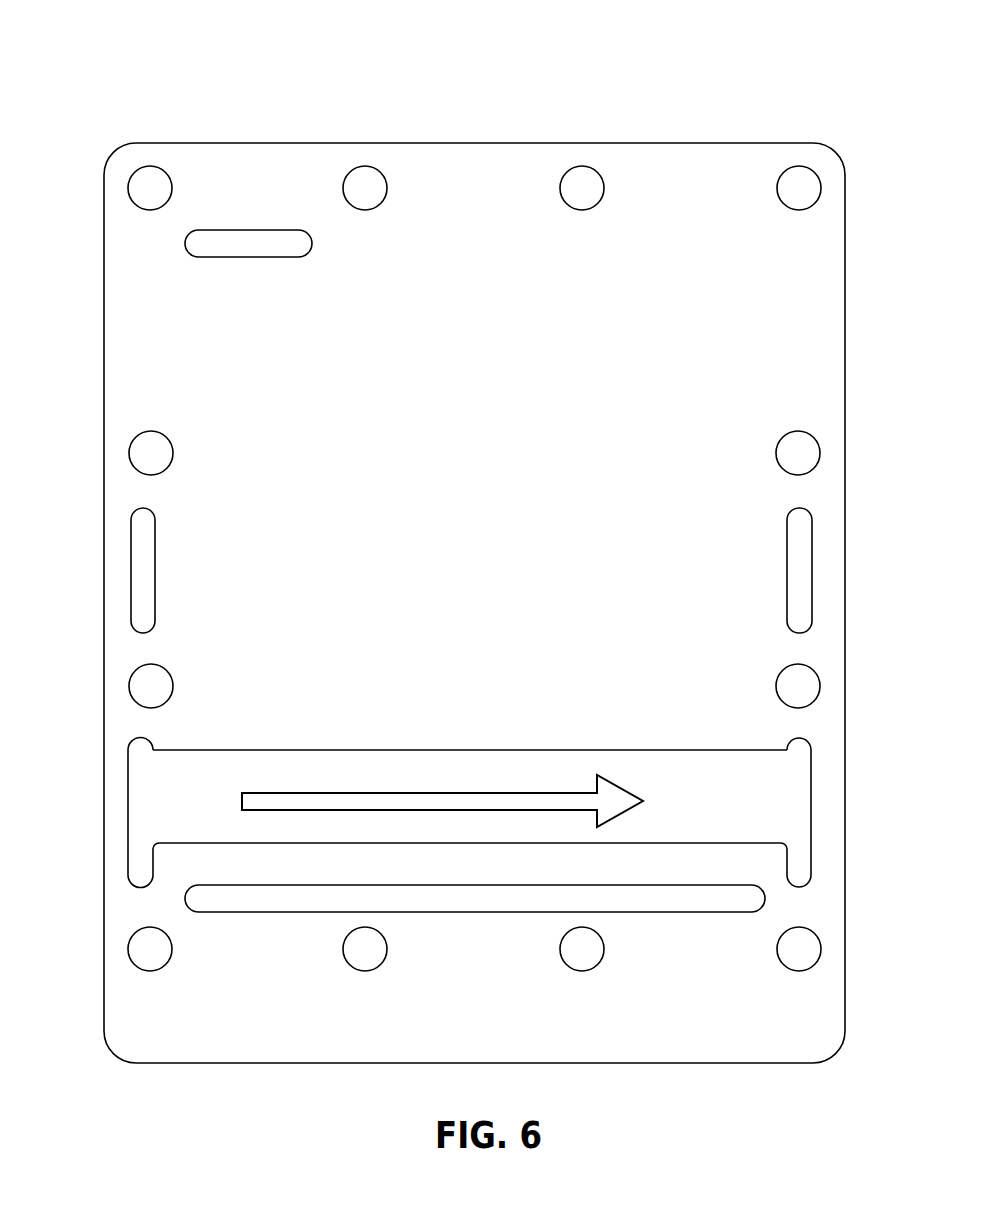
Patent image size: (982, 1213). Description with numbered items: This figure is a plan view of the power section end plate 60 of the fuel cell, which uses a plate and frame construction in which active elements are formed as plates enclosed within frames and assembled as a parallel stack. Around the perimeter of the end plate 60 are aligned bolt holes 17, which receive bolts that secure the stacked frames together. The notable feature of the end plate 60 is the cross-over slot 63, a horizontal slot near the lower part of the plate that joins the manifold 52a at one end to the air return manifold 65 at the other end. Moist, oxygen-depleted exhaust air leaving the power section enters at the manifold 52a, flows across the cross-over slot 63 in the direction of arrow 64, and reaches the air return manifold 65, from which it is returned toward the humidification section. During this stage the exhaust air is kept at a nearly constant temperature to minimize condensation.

The power section end plate 60 is at (366, 54).
The bolt holes 17 is at (151, 166).
The cross-over slot 63 is at (252, 750).
The arrow 64 is at (437, 793).
The air return manifold 65 is at (812, 828).
The manifold 52a is at (128, 810).